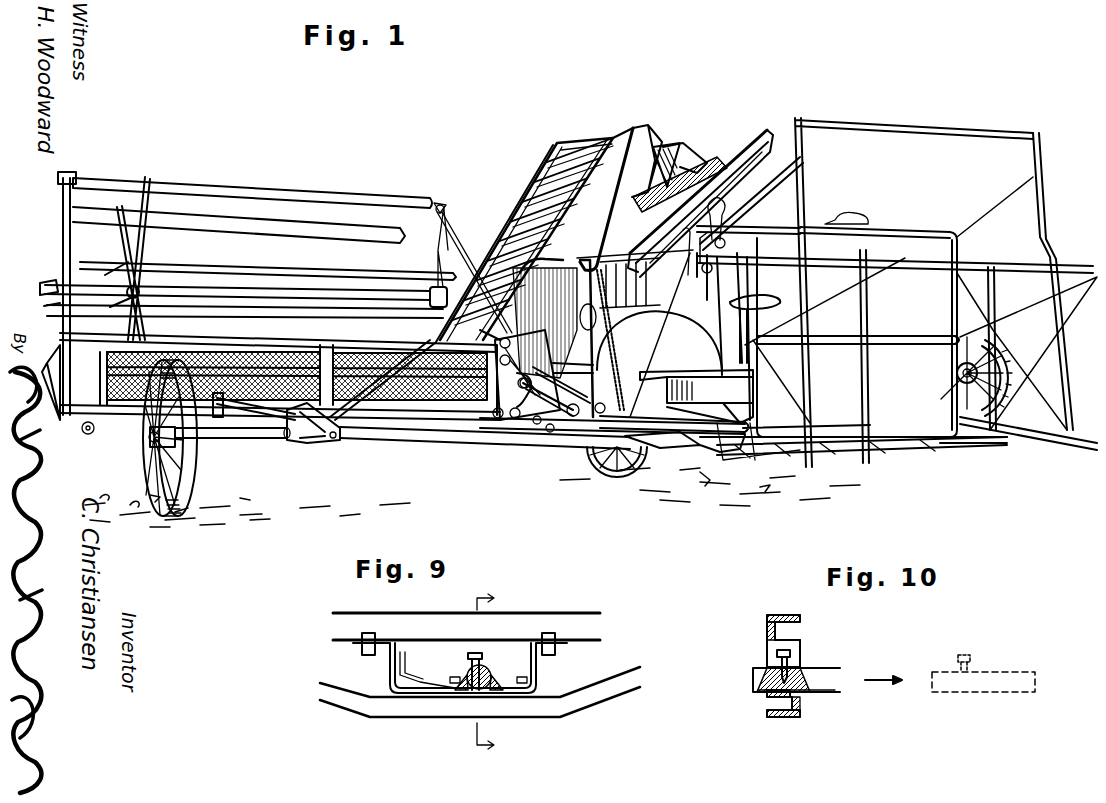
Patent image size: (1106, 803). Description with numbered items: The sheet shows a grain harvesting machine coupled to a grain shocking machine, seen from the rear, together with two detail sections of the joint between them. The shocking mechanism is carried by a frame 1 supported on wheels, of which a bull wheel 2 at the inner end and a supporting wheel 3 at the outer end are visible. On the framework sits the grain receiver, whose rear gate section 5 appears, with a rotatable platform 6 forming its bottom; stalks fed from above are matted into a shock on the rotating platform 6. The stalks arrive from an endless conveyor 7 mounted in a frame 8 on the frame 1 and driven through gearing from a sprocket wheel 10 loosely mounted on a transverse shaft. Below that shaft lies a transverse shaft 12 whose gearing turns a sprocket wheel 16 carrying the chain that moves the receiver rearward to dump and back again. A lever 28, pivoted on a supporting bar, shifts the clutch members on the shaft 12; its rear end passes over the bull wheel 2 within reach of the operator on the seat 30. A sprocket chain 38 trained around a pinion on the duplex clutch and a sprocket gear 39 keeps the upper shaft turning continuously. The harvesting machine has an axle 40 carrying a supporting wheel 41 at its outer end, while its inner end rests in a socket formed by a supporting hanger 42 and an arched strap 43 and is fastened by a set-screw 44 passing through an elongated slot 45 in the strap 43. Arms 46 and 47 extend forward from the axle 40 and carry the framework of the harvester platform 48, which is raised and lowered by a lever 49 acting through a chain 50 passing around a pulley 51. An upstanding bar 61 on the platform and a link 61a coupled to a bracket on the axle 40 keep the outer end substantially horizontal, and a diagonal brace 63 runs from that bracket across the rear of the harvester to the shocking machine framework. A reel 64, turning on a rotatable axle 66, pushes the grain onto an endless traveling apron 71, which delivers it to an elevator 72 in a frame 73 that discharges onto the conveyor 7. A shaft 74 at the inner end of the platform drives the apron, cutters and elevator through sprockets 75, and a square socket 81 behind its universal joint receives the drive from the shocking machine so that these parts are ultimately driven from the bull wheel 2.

In FIG. 1, the frame 1 is at (950, 440).
In FIG. 1, the bull wheel 2 is at (617, 473).
In FIG. 1, the supporting wheel 3 is at (1003, 405).
In FIG. 1, the rear gate section 5 is at (858, 324).
In FIG. 1, the rotatable platform 6 is at (920, 441).
In FIG. 1, the endless conveyor 7 is at (705, 172).
In FIG. 1, the frame 8 is at (741, 148).
In FIG. 9, the sprocket wheel 10 is at (498, 672).
In FIG. 1, the transverse shaft 12 is at (563, 318).
In FIG. 1, the sprocket wheel 16 is at (508, 359).
In FIG. 1, the lever 28 is at (648, 330).
In FIG. 1, the seat 30 is at (773, 290).
In FIG. 1, the sprocket chain 38 is at (560, 375).
In FIG. 1, the sprocket gear 39 is at (570, 313).
In FIG. 1, the axle 40 is at (250, 440).
In FIG. 9, the axle 40 is at (480, 692).
In FIG. 10, the axle 40 is at (830, 692).
In FIG. 1, the supporting wheel 41 is at (183, 478).
In FIG. 9, the supporting hanger 42 is at (533, 673).
In FIG. 10, the supporting hanger 42 is at (767, 650).
In FIG. 9, the arched strap 43 is at (466, 688).
In FIG. 10, the arched strap 43 is at (800, 667).
In FIG. 9, the set-screw 44 is at (467, 657).
In FIG. 10, the set-screw 44 is at (793, 650).
In FIG. 9, the elongated slot 45 is at (487, 674).
In FIG. 10, the elongated slot 45 is at (767, 663).
In FIG. 1, the arm 46 is at (577, 463).
In FIG. 1, the arm 47 is at (227, 418).
In FIG. 1, the platform framework 48 is at (101, 430).
In FIG. 1, the lever 49 is at (696, 384).
In FIG. 1, the chain 50 is at (563, 413).
In FIG. 1, the pulley 51 is at (527, 407).
In FIG. 1, the upstanding bar 61 is at (205, 410).
In FIG. 1, the link 61a is at (270, 418).
In FIG. 1, the brace 63 is at (413, 437).
In FIG. 1, the reel 64 is at (188, 184).
In FIG. 1, the rotatable axle 66 is at (433, 307).
In FIG. 1, the endless traveling apron 71 is at (550, 432).
In FIG. 1, the elevator 72 is at (536, 191).
In FIG. 1, the frame 73 is at (583, 233).
In FIG. 1, the shaft 74 is at (537, 424).
In FIG. 1, the sprockets 75 is at (490, 420).
In FIG. 1, the square socket 81 is at (643, 463).